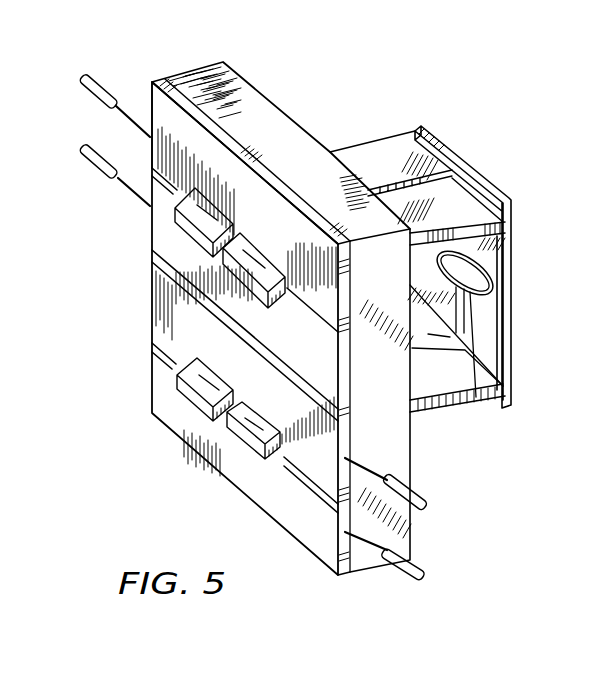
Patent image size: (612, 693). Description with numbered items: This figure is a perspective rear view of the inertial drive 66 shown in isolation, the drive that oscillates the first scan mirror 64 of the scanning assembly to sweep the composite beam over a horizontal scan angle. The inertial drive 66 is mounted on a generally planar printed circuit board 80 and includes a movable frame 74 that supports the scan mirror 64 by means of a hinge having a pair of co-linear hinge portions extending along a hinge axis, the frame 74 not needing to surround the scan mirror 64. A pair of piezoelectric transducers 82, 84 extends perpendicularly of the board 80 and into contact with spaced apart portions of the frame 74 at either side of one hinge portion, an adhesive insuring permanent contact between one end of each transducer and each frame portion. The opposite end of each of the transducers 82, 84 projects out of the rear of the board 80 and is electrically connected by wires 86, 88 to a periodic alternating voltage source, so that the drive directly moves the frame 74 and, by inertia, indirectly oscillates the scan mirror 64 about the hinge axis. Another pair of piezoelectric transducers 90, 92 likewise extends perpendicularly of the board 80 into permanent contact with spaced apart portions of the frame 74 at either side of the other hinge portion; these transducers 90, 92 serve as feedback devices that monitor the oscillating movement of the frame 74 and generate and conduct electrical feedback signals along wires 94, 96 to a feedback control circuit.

The first scan mirror 64 is at (476, 392).
The inertial drive 66 is at (463, 121).
The movable frame 74 is at (492, 248).
The printed circuit board 80 is at (153, 82).
The piezoelectric transducer 82 is at (460, 204).
The piezoelectric transducer 84 is at (387, 160).
The wire 86 is at (108, 90).
The wire 88 is at (97, 146).
The piezoelectric transducer 90 is at (430, 333).
The piezoelectric transducer 92 is at (490, 400).
The wire 94 is at (426, 508).
The wire 96 is at (425, 578).